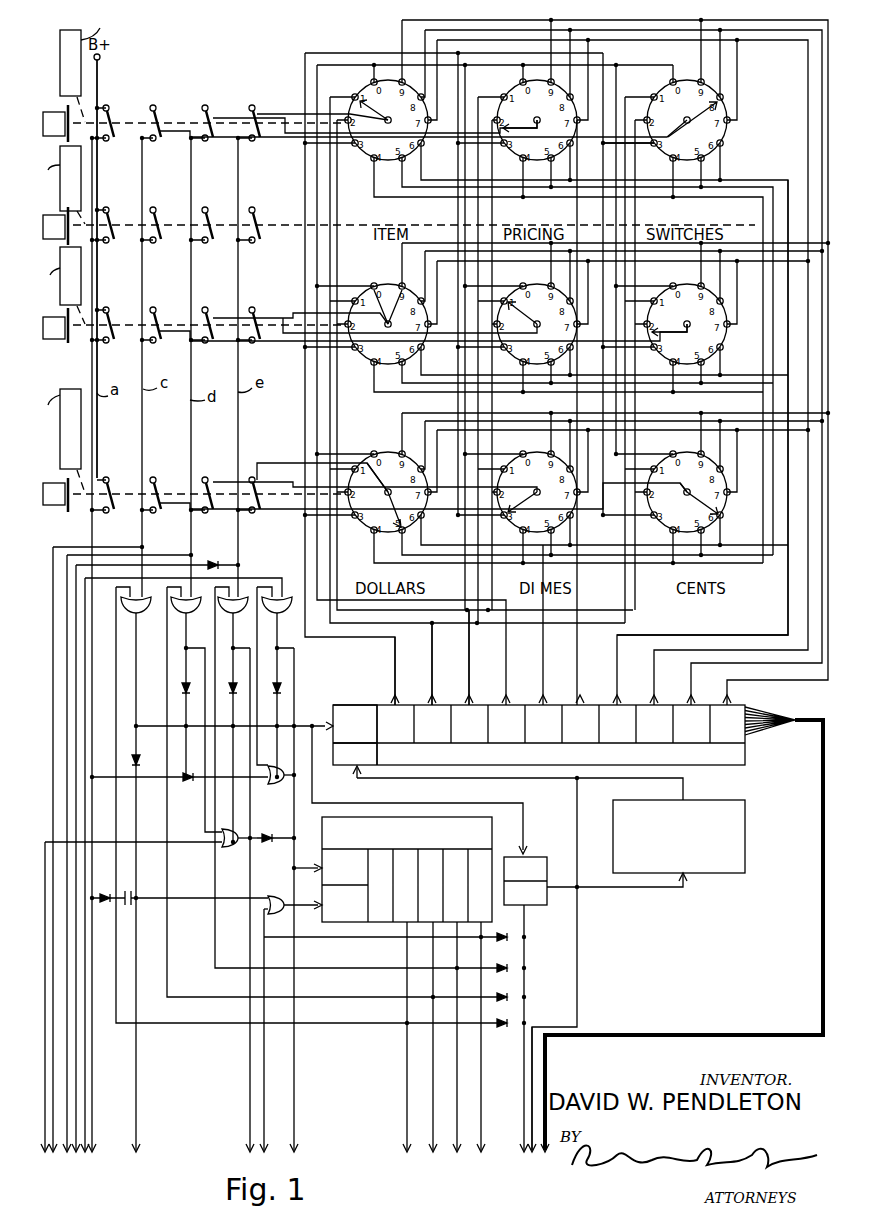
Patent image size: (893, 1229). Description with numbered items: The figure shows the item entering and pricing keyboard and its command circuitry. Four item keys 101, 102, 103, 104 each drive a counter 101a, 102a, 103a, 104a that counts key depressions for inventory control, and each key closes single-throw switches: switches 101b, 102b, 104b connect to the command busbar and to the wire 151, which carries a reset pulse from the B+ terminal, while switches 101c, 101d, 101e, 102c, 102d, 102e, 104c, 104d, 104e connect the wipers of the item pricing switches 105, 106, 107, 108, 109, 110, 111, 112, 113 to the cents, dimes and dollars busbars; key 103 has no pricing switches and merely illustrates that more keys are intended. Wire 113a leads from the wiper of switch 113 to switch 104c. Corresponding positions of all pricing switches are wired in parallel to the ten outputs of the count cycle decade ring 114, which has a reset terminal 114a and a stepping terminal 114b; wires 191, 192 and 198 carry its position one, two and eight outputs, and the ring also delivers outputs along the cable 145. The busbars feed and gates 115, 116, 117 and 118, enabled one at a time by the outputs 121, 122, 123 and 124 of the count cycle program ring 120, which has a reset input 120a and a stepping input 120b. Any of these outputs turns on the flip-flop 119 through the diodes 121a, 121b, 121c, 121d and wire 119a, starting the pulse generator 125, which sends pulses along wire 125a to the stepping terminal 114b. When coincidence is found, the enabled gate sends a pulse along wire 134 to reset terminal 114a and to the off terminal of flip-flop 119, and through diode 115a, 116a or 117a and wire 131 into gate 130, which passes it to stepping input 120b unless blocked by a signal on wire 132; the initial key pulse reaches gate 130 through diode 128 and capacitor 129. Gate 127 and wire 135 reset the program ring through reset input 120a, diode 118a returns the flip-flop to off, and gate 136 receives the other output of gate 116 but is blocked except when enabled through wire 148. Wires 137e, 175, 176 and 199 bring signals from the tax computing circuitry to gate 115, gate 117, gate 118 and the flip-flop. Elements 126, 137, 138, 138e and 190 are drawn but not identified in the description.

The item key 101 is at (50, 492).
The counter 101a is at (56, 388).
The switch 101b is at (112, 480).
The switch 101c is at (153, 480).
The switch 101d is at (205, 480).
The switch 101e is at (258, 490).
The item key 102 is at (50, 339).
The counter 102a is at (48, 261).
The switch 102b is at (119, 314).
The switch 102c is at (153, 310).
The switch 102d is at (205, 310).
The switch 102e is at (252, 310).
The item key 103 is at (62, 213).
The counter 103a is at (48, 158).
The item key 104 is at (50, 120).
The counter 104a is at (111, 26).
The switch 104b is at (125, 98).
The switch 104c is at (153, 108).
The switch 104d is at (205, 108).
The switch 104e is at (252, 108).
The item pricing switch 105 is at (370, 520).
The item pricing switch 106 is at (520, 515).
The item pricing switch 107 is at (680, 510).
The item pricing switch 108 is at (370, 352).
The item pricing switch 109 is at (520, 350).
The item pricing switch 110 is at (670, 345).
The item pricing switch 111 is at (370, 155).
The item pricing switch 112 is at (520, 148).
The item pricing switch 113 is at (675, 145).
The wire 113a is at (603, 146).
The count cycle decade ring 114 is at (712, 760).
The reset terminal 114a is at (365, 708).
The stepping terminal 114b is at (352, 765).
The gate 115 is at (136, 613).
The diode 115a is at (155, 750).
The gate 116 is at (204, 618).
The diode 116a is at (176, 690).
The gate 117 is at (240, 612).
The diode 117a is at (223, 690).
The gate 118 is at (292, 615).
The diode 118a is at (283, 688).
The bistable flip-flop switch 119 is at (545, 870).
The wire 119a is at (530, 930).
The count cycle program ring 120 is at (405, 817).
The reset input 120a is at (330, 880).
The stepping input 120b is at (330, 915).
The cents output wire 121 is at (116, 662).
The diode 121a is at (510, 1020).
The diode 121b is at (501, 987).
The diode 121c is at (500, 957).
The diode 121d is at (509, 927).
The dimes output wire 122 is at (178, 762).
The dollars output wire 123 is at (205, 750).
The tens output wire 124 is at (250, 750).
The pulse generator 125 is at (735, 835).
The wire 125a is at (525, 780).
The diode 126 is at (178, 778).
The gate 127 is at (282, 785).
The diode 128 is at (105, 892).
The capacitor 129 is at (128, 905).
The gate 130 is at (265, 905).
The wire 131 is at (196, 898).
The wire 132 is at (262, 945).
The wire 134 is at (136, 700).
The wire 135 is at (294, 805).
The gate 136 is at (236, 846).
The diode 137 is at (266, 850).
The wire 137e is at (128, 540).
The line 138 is at (67, 770).
The line 138e is at (170, 545).
The cable 145 is at (765, 710).
The wire 148 is at (190, 836).
The wire 151 is at (97, 185).
The wire 175 is at (198, 565).
The wire 176 is at (268, 578).
The line 190 is at (392, 658).
The wire 191 is at (430, 645).
The wire 192 is at (467, 657).
The wire 198 is at (712, 660).
The wire 199 is at (524, 1112).